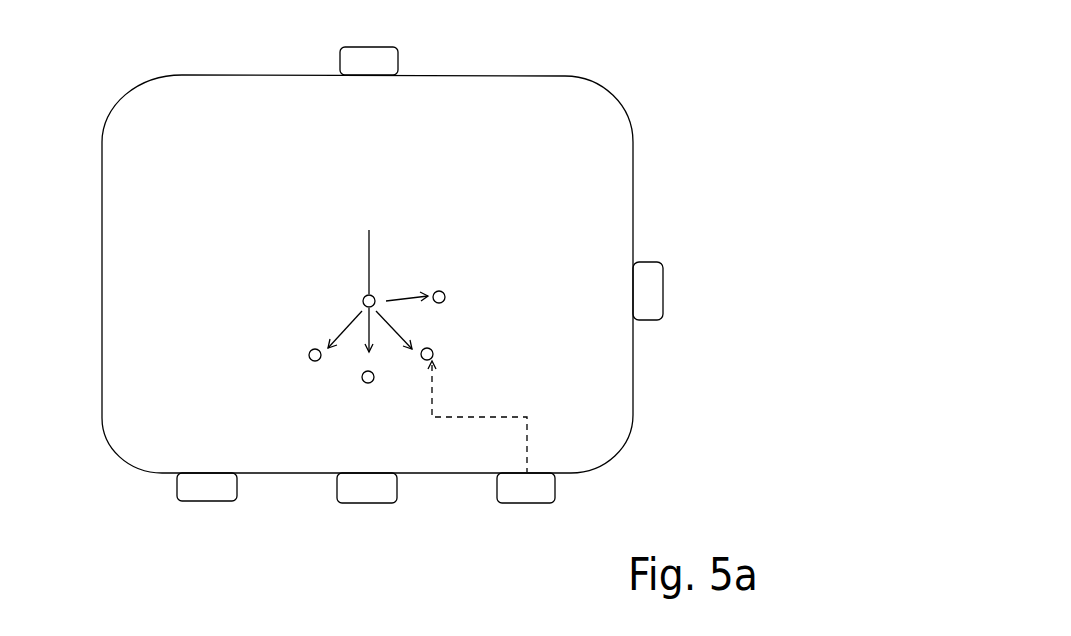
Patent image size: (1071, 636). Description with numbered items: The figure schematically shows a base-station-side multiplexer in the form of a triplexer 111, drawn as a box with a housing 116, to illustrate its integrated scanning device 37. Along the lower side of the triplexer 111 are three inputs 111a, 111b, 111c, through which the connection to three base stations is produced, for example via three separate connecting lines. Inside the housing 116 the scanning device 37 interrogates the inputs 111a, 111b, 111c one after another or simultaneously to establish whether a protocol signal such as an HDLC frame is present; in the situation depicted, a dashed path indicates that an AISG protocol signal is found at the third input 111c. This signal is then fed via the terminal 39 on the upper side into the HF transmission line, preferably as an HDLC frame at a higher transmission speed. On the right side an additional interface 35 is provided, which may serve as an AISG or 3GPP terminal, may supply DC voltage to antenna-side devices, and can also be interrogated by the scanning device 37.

The triplexer 111 is at (454, 260).
The remote control housing 116 is at (658, 72).
The output 39 is at (386, 58).
The additional interface 35 is at (663, 292).
The scanning device 37 is at (434, 243).
The first input 111a is at (208, 503).
The second input 111b is at (367, 510).
The third input 111c is at (529, 510).